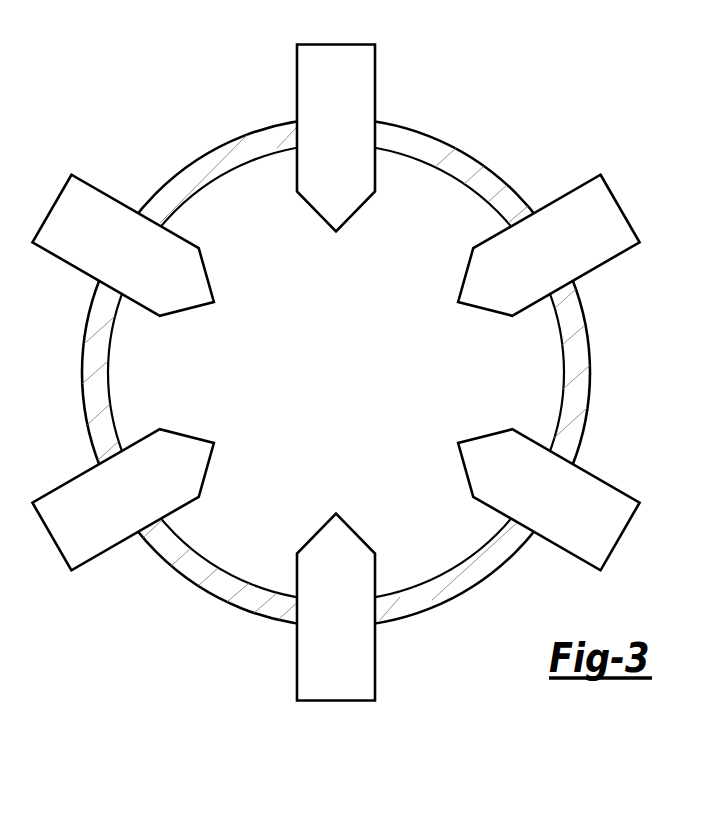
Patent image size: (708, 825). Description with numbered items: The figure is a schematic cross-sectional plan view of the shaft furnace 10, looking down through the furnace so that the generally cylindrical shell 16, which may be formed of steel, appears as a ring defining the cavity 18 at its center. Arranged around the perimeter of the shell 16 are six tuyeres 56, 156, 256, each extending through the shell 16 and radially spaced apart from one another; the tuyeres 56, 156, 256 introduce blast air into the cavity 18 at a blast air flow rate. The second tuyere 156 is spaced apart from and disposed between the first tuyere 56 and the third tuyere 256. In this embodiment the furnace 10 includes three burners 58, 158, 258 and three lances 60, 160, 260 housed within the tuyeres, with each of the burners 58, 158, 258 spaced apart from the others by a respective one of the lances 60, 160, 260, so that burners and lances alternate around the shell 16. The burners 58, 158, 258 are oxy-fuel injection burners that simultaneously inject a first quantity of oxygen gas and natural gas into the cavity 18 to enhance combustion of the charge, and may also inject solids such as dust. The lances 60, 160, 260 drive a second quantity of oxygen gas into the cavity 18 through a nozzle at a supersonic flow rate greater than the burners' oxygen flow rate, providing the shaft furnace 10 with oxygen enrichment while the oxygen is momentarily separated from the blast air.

The shaft furnace 10 is at (132, 94).
The shell 16 is at (470, 152).
The cavity 18 is at (346, 383).
The first one of the plurality of tuyeres 56 is at (539, 255).
The first one of the plurality of burners 58 is at (539, 255).
The first one of the plurality of lances 60 is at (132, 489).
The second one of the plurality of tuyeres 156 is at (539, 489).
The second one of the plurality of burners 158 is at (132, 255).
The second one of the plurality of lances 160 is at (539, 489).
The third one of the plurality of tuyeres 256 is at (336, 138).
The third one of the plurality of burners 258 is at (336, 607).
The third one of the plurality of lances 260 is at (336, 138).